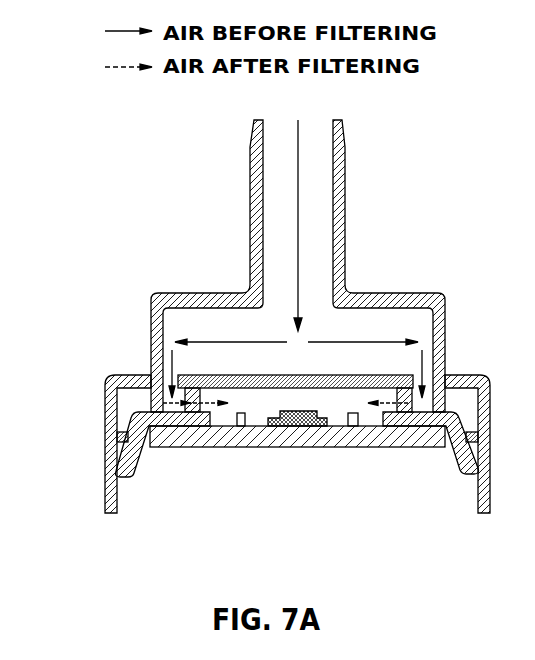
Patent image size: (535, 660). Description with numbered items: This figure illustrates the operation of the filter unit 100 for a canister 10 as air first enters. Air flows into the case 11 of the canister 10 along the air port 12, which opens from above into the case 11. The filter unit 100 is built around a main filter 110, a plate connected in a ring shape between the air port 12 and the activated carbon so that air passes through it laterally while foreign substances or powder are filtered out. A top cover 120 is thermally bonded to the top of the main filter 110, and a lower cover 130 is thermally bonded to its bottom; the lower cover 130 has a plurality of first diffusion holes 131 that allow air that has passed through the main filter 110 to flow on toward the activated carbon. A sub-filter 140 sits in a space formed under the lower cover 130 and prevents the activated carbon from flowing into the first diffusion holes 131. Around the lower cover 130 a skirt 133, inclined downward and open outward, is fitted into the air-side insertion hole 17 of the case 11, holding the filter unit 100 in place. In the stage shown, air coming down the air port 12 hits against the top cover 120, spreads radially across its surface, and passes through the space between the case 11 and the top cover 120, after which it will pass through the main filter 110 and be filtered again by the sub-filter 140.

The canister 10 is at (274, 316).
The case 11 is at (120, 405).
The air port 12 is at (343, 192).
The air-side insertion hole 17 is at (103, 418).
The filter unit 100 is at (258, 393).
The main filter 110 is at (148, 378).
The top cover 120 is at (150, 376).
The lower cover 130 is at (258, 485).
The first diffusion holes 131 is at (337, 426).
The skirt 133 is at (105, 452).
The sub-filter 140 is at (253, 447).